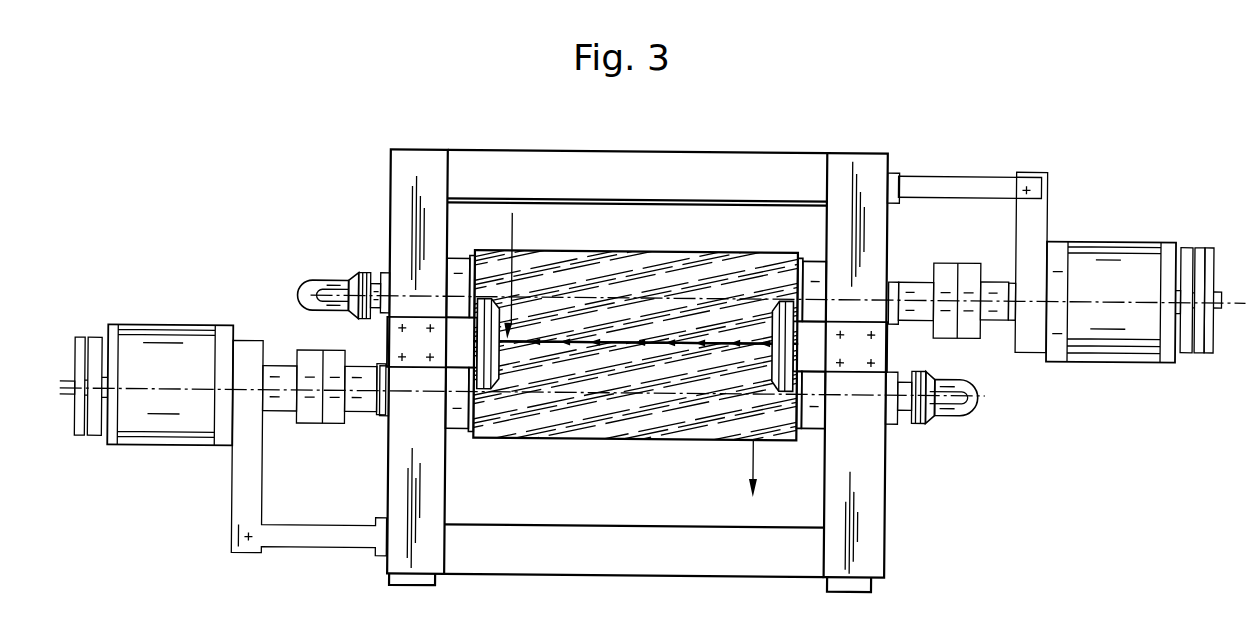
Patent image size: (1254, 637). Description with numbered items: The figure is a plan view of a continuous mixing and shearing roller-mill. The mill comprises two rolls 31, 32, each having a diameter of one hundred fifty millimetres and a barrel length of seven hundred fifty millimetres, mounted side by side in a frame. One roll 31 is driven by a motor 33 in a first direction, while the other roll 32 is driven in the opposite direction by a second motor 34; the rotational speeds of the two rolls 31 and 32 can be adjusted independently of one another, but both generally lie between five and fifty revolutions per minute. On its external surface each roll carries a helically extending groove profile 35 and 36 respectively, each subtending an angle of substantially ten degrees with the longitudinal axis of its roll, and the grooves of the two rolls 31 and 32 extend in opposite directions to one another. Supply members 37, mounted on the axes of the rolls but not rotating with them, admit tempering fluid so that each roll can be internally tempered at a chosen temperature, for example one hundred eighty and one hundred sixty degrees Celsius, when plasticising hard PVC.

The roll 31 is at (542, 256).
The roll 32 is at (513, 428).
The motor 33 is at (1108, 248).
The second motor 34 is at (165, 342).
The helically extending groove profile 35 is at (670, 263).
The helically extending groove profile 36 is at (653, 428).
The supply member 37 is at (320, 285).